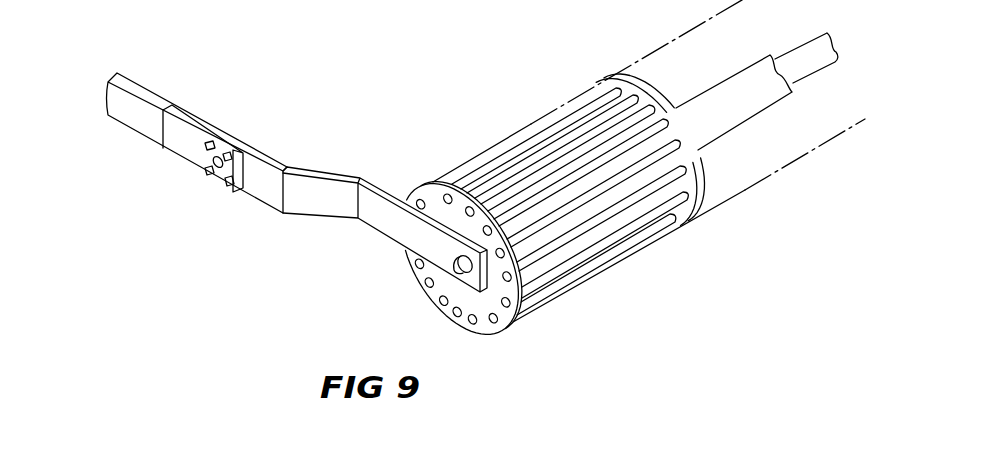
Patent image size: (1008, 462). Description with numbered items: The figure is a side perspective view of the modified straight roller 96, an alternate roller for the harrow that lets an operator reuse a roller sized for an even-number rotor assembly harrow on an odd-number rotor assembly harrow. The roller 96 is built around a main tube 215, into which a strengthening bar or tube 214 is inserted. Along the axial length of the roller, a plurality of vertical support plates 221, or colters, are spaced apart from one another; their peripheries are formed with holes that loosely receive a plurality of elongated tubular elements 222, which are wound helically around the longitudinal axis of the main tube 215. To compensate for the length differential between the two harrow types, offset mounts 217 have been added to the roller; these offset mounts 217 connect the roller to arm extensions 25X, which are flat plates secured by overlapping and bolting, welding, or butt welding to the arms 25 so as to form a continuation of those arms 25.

The arms 25 is at (124, 116).
The arm extensions 25X is at (182, 160).
The offset mounts 217 is at (322, 207).
The vertical support plates 221 is at (507, 336).
The elongated tubular elements 222 is at (543, 122).
The modified straight roller 96 is at (667, 252).
The strengthening bar or tube 214 is at (832, 66).
The main tube 215 is at (750, 123).